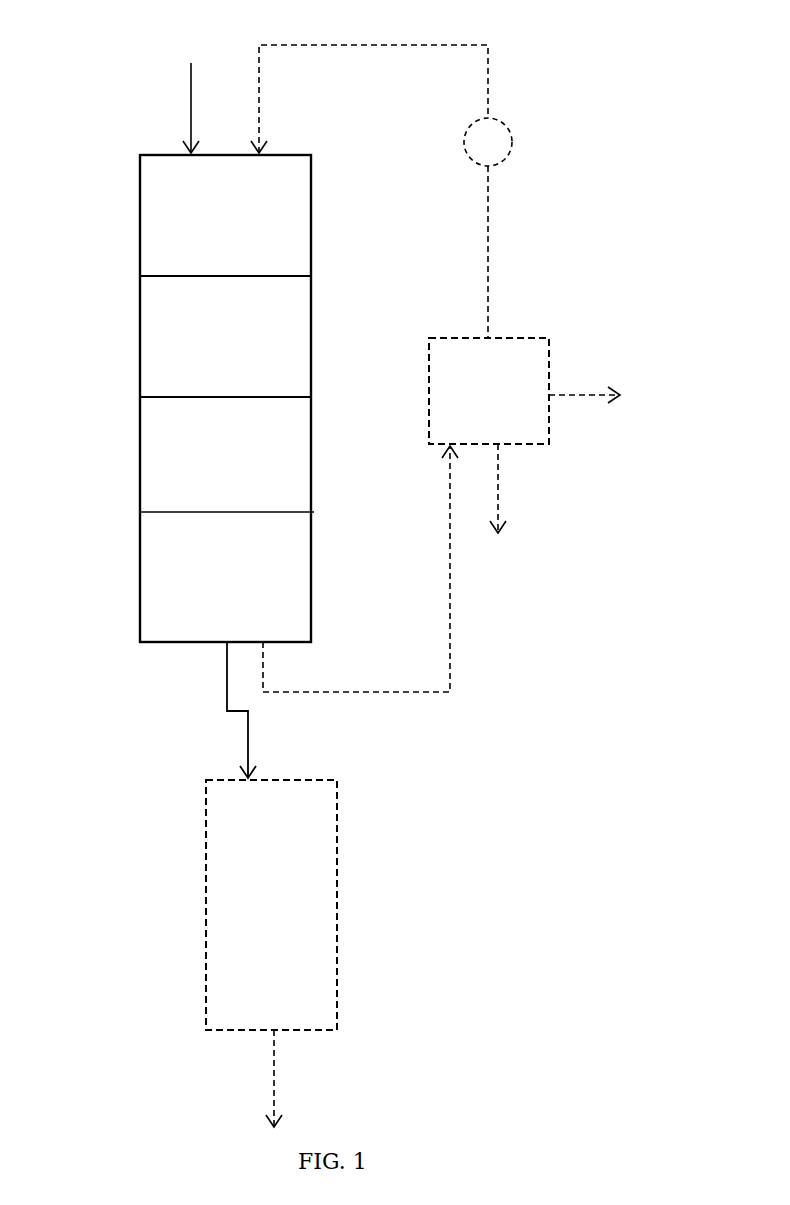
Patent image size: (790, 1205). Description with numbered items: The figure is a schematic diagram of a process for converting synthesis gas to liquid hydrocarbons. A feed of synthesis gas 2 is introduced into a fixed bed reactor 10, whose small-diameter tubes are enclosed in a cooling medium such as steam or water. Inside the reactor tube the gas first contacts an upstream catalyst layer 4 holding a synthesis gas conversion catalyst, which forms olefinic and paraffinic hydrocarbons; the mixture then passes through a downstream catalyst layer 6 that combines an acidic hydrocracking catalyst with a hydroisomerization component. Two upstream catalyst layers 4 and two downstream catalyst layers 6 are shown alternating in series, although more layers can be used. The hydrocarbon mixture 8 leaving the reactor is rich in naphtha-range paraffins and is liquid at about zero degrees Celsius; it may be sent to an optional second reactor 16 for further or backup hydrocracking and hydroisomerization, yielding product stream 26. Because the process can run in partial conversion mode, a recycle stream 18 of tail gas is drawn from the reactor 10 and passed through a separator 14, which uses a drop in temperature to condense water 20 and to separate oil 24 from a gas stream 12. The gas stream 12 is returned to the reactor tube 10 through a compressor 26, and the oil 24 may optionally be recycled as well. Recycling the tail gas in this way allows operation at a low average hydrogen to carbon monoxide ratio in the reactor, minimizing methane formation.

The synthesis gas feed 2 is at (185, 93).
The upstream catalyst layer 4 is at (227, 368).
The downstream catalyst layer 6 is at (212, 451).
The hydrocarbon mixture 8 is at (222, 710).
The fixed bed reactor 10 is at (137, 247).
The gas stream 12 is at (508, 252).
The separator 14 is at (489, 391).
The second reactor 16 is at (271, 905).
The recycle stream 18 is at (360, 569).
The water 20 is at (514, 488).
The oil 24 is at (584, 383).
The compressor / product stream 26 is at (381, 586).